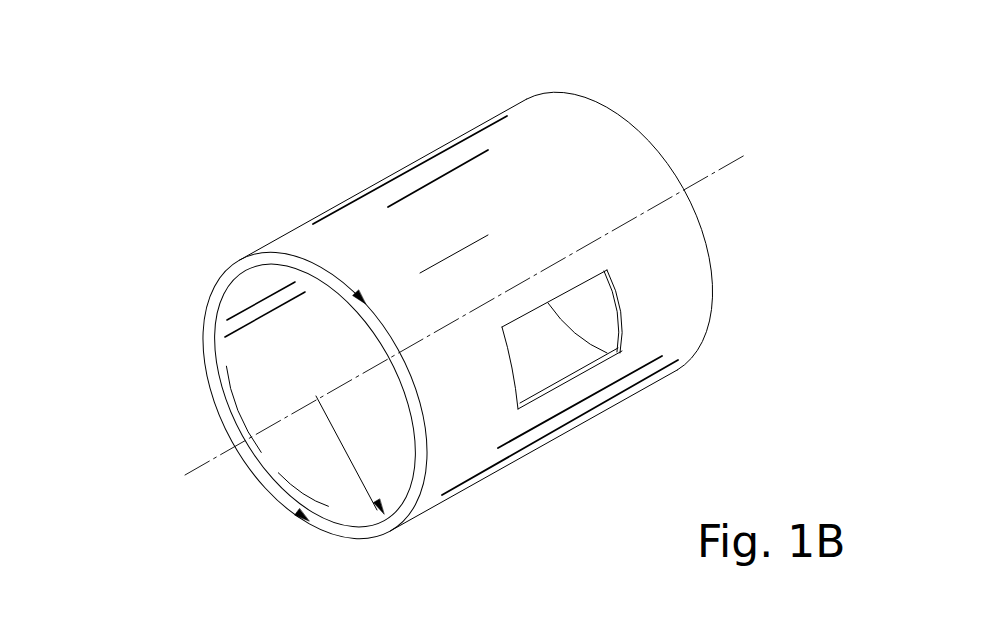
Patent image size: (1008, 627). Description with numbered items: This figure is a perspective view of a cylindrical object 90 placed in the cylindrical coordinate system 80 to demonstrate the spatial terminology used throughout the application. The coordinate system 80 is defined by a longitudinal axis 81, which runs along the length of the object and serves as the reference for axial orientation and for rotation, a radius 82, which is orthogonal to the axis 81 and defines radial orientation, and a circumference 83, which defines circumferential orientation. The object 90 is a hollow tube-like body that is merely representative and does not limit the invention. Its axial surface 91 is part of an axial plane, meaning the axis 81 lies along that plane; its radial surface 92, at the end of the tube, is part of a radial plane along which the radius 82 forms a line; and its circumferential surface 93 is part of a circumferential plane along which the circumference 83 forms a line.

The cylindrical coordinate system 80 is at (651, 106).
The longitudinal axis 81 is at (192, 467).
The radius 82 is at (360, 463).
The circumference 83 is at (211, 288).
The cylindrical object 90 is at (500, 88).
The axial surface 91 is at (586, 365).
The radial surface 92 is at (331, 525).
The circumferential surface 93 is at (437, 200).